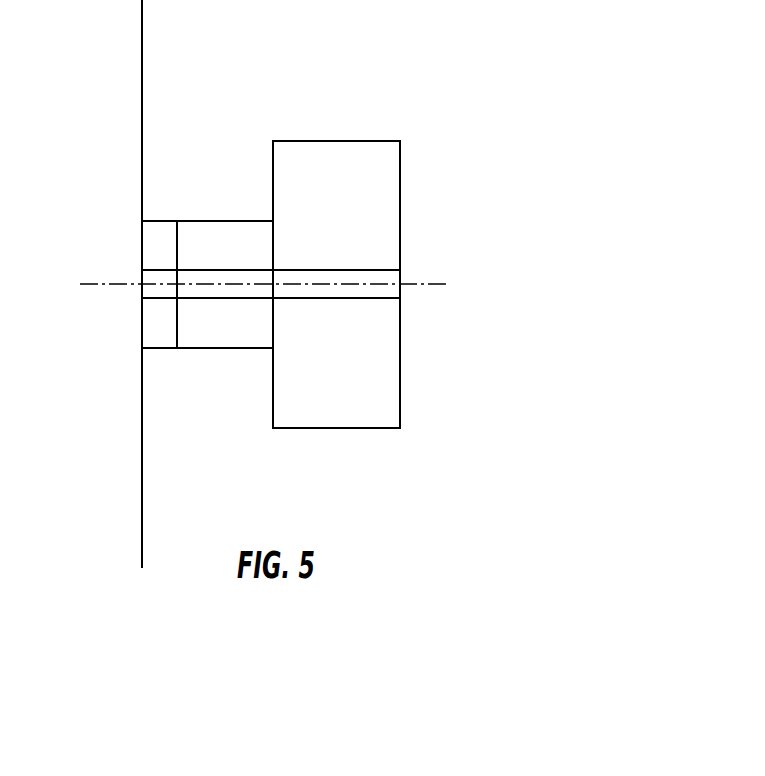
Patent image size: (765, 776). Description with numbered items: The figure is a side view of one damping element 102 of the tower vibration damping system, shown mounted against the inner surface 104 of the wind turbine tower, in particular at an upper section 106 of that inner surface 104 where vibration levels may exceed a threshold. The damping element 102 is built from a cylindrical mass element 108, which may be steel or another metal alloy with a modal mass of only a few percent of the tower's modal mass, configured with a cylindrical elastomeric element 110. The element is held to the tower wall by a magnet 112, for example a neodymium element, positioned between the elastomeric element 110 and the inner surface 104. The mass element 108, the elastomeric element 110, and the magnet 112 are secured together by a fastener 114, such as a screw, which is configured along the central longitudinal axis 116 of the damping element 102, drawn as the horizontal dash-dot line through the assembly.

The damping element 102 is at (512, 170).
The inner surface 104 is at (142, 68).
The upper section 106 is at (141, 498).
The cylindrical mass element 108 is at (344, 132).
The cylindrical elastomeric element 110 is at (221, 252).
The magnet 112 is at (157, 208).
The fastener 114 is at (375, 268).
The central longitudinal axis 116 is at (117, 285).